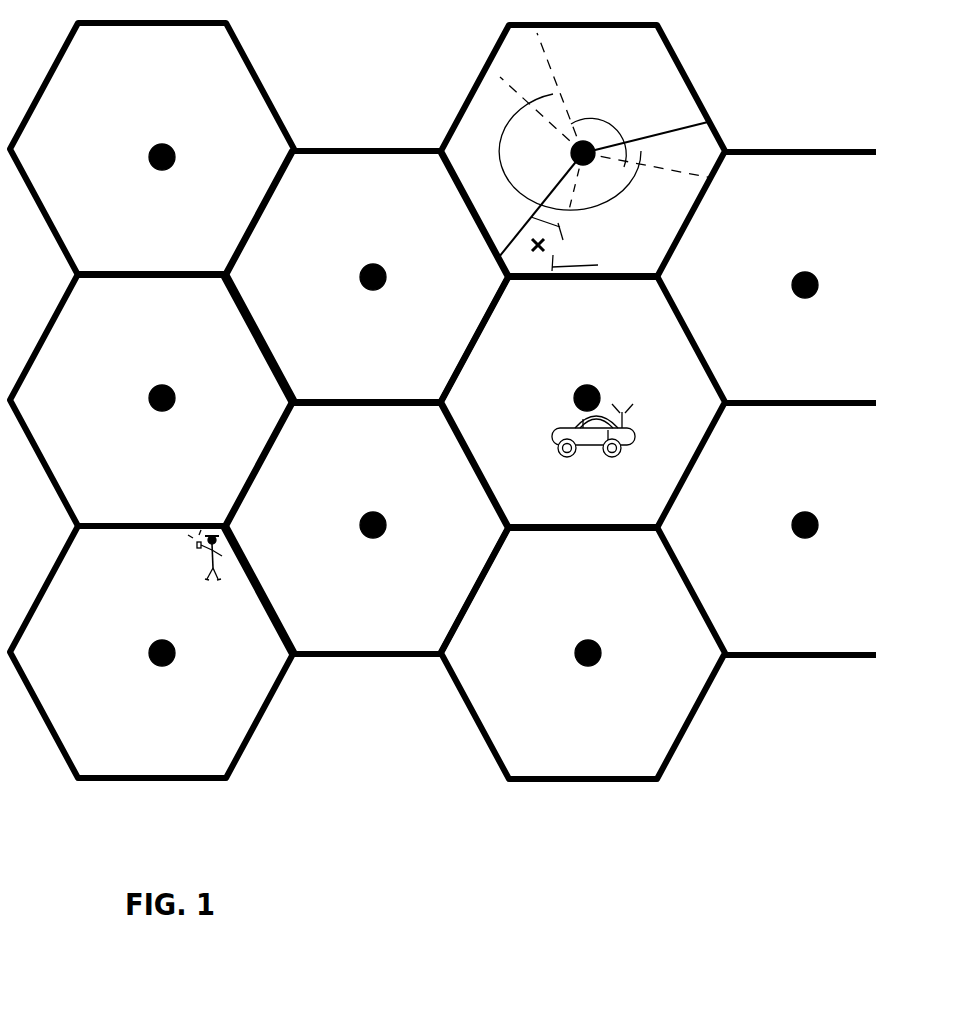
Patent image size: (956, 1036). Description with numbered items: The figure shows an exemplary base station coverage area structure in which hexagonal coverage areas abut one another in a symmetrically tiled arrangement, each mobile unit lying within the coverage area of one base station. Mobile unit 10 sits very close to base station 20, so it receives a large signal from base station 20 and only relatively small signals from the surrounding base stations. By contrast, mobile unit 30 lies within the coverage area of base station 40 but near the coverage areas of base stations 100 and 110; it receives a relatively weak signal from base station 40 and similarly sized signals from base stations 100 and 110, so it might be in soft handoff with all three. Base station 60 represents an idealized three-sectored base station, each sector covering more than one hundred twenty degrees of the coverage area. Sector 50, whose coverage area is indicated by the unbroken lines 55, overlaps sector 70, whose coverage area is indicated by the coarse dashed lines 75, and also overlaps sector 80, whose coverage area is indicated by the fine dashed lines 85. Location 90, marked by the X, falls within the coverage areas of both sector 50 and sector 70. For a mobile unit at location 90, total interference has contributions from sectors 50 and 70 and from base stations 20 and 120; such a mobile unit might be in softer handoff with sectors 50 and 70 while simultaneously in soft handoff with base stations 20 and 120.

The mobile unit 10 is at (574, 428).
The base station 20 is at (592, 388).
The mobile unit 30 is at (213, 581).
The base station 40 is at (162, 662).
The sector 50 is at (622, 199).
The unbroken lines 55 is at (700, 126).
The base station 60 is at (571, 154).
The sector 70 is at (502, 139).
The coarse dashed lines 75 is at (545, 62).
The sector 80 is at (614, 121).
The fine dashed lines 85 is at (496, 74).
The location 90 is at (546, 244).
The base station 100 is at (175, 396).
The base station 110 is at (386, 524).
The base station 120 is at (386, 276).